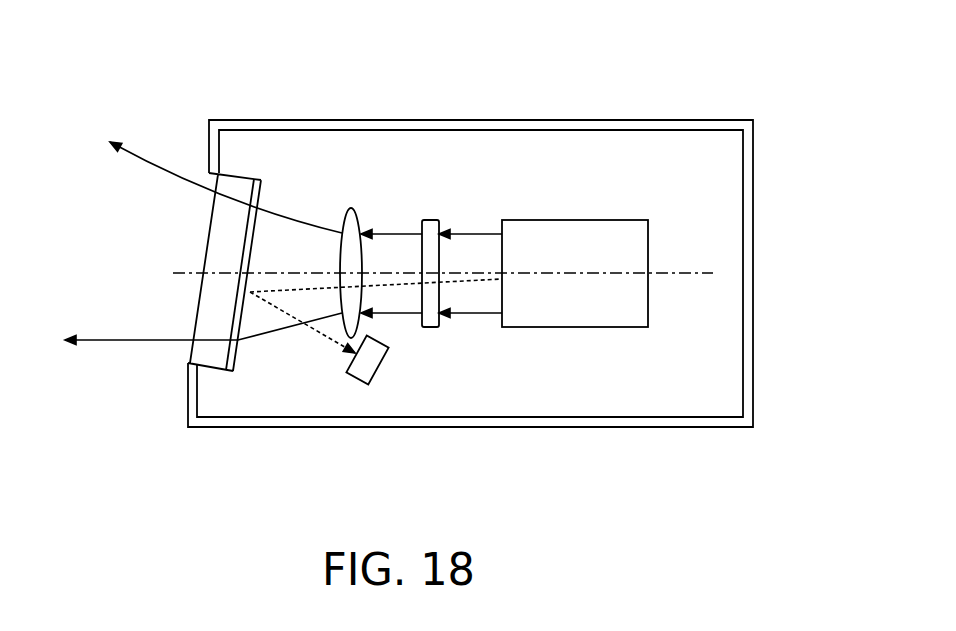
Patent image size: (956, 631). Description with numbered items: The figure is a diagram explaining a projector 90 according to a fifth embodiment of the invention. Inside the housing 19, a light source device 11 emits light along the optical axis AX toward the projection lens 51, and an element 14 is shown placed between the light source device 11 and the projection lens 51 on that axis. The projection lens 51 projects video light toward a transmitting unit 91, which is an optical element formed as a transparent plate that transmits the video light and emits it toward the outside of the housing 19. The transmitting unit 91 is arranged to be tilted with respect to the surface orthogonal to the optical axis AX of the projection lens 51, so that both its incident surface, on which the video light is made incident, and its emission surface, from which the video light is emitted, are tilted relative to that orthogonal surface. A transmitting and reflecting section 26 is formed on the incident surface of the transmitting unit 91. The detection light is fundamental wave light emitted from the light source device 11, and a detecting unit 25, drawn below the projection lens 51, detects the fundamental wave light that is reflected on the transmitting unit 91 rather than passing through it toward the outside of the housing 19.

The projector 90 is at (220, 55).
The housing 19 is at (708, 420).
The transmitting unit 91 is at (197, 358).
The transmitting and reflecting section 26 is at (237, 363).
The projection lens 51 is at (347, 208).
The filter 14 is at (435, 220).
The light source device 11 is at (634, 220).
The detecting unit 25 is at (360, 387).
The optical axis AX is at (692, 273).